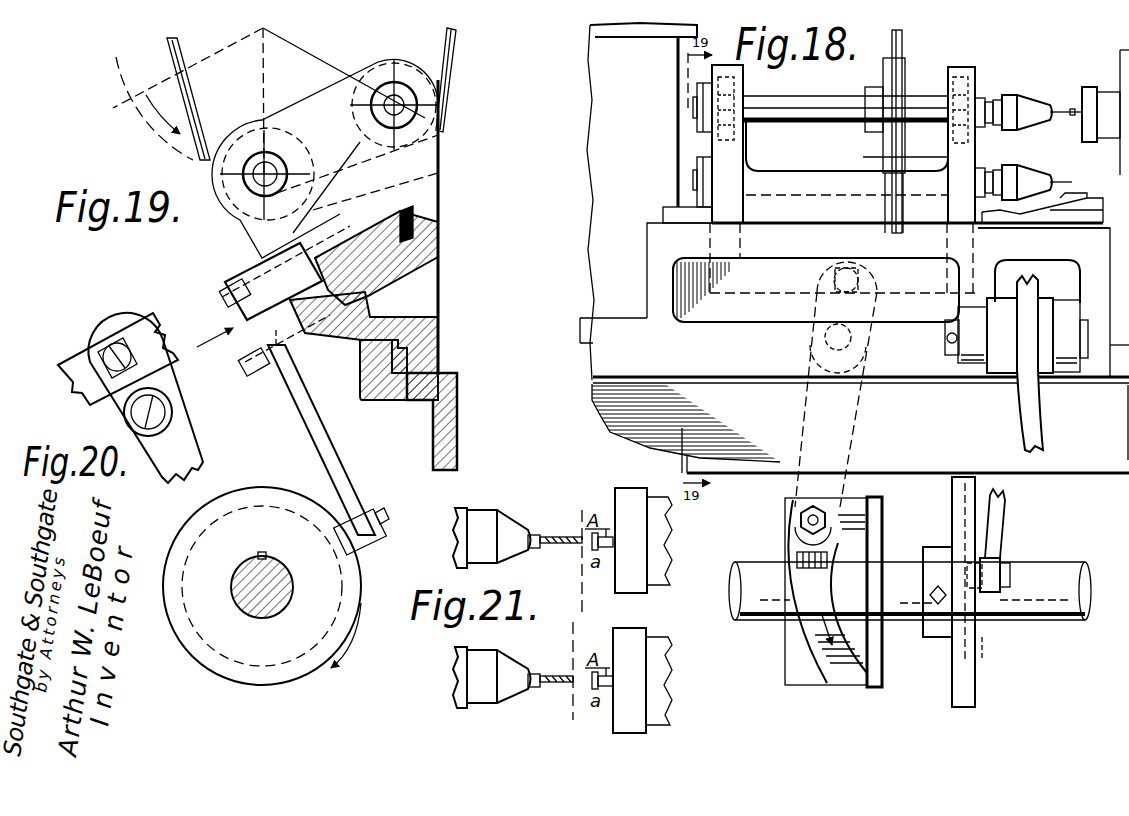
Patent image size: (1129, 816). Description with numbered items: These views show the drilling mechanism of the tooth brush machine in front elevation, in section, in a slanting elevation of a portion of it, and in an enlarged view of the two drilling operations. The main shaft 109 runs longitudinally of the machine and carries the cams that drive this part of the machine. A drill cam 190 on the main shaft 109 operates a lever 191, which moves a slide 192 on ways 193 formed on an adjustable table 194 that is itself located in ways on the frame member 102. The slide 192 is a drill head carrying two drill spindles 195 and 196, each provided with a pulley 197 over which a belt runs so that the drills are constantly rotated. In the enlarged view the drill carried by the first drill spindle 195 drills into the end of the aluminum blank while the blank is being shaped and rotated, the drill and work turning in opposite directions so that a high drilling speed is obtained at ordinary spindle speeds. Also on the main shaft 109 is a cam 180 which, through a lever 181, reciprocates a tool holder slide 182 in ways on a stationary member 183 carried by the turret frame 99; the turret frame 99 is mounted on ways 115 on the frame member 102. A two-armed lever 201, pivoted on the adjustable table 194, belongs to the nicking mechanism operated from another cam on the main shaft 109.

In FIG. 18, the turret frame 99 is at (1120, 62).
In FIG. 19, the frame member 102 is at (457, 422).
In FIG. 18, the frame member 102 is at (1120, 474).
In FIG. 19, the main shaft 109 is at (250, 570).
In FIG. 18, the main shaft 109 is at (760, 620).
In FIG. 19, the ways 115 is at (360, 360).
In FIG. 18, the ways 115 is at (590, 330).
In FIG. 18, the cam 180 is at (975, 653).
In FIG. 18, the lever 181 is at (1000, 515).
In FIG. 18, the tool holder slide 182 is at (1080, 196).
In FIG. 18, the stationary member 183 is at (1050, 228).
In FIG. 19, the drill cam 190 is at (258, 684).
In FIG. 18, the drill cam 190 is at (882, 532).
In FIG. 19, the lever 191 is at (326, 428).
In FIG. 20, the lever 191 is at (188, 440).
In FIG. 18, the lever 191 is at (812, 487).
In FIG. 19, the slide 192 is at (422, 183).
In FIG. 20, the slide 192 is at (150, 330).
In FIG. 18, the slide 192 is at (743, 137).
In FIG. 19, the ways 193 is at (385, 228).
In FIG. 18, the ways 193 is at (670, 208).
In FIG. 19, the adjustable table 194 is at (438, 333).
In FIG. 18, the adjustable table 194 is at (655, 267).
In FIG. 21, the first drill spindle 195 is at (456, 690).
In FIG. 18, the first drill spindle 195 is at (832, 160).
In FIG. 21, the drill spindle 196 is at (456, 530).
In FIG. 18, the drill spindle 196 is at (838, 104).
In FIG. 19, the pulley 197 is at (382, 56).
In FIG. 18, the pulley 197 is at (902, 92).
In FIG. 18, the lever 201 is at (1030, 425).